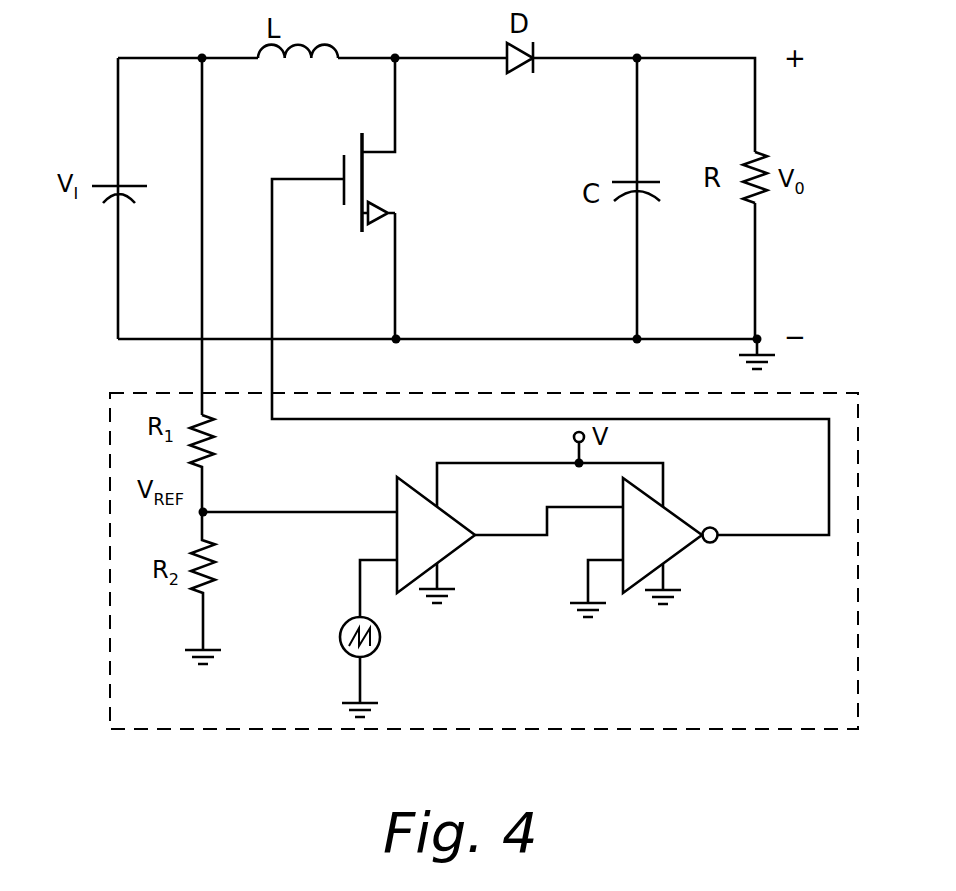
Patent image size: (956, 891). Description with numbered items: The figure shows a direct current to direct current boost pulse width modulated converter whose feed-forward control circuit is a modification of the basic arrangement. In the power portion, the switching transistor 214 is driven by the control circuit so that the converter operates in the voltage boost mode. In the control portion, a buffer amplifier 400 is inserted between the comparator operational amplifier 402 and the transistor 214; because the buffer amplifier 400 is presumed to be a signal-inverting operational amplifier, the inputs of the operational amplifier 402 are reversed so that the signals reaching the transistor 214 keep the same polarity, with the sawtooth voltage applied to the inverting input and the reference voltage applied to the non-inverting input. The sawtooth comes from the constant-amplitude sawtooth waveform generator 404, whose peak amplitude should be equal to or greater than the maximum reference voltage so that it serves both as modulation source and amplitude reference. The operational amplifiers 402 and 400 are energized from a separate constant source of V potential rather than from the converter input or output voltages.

The switching transistor 214 is at (362, 186).
The buffer amplifier 400 is at (690, 550).
The operational amplifier 402 is at (457, 552).
The sawtooth waveform generator 404 is at (381, 636).